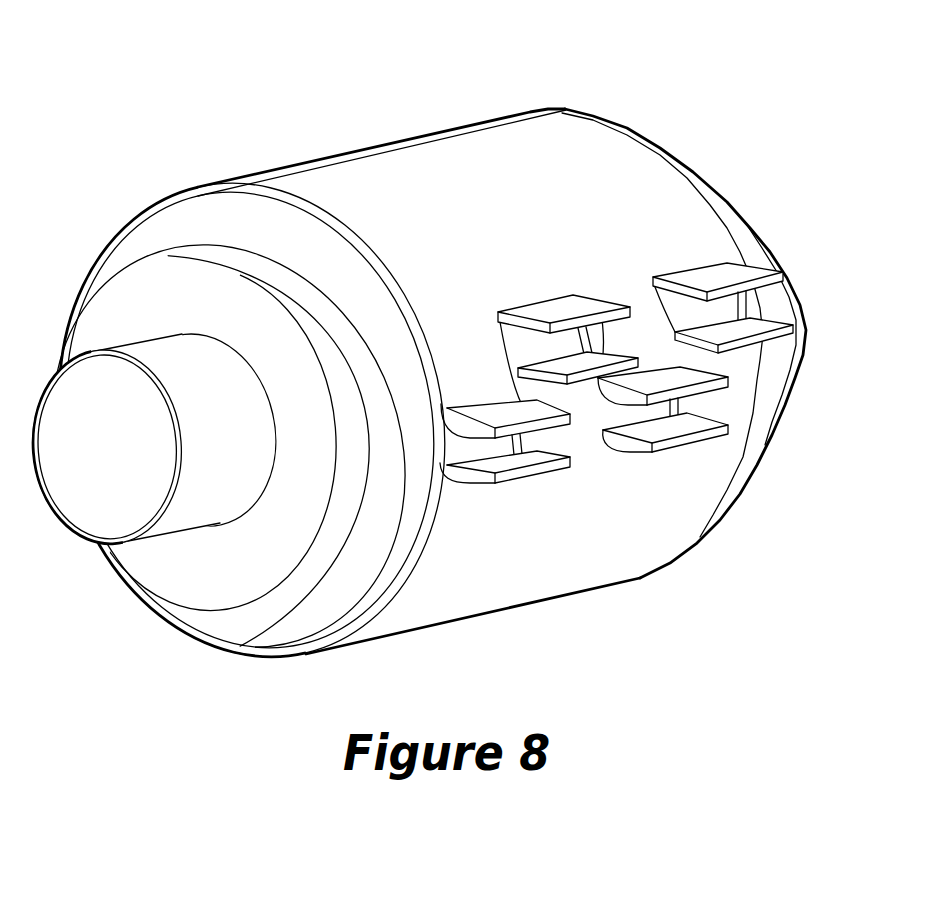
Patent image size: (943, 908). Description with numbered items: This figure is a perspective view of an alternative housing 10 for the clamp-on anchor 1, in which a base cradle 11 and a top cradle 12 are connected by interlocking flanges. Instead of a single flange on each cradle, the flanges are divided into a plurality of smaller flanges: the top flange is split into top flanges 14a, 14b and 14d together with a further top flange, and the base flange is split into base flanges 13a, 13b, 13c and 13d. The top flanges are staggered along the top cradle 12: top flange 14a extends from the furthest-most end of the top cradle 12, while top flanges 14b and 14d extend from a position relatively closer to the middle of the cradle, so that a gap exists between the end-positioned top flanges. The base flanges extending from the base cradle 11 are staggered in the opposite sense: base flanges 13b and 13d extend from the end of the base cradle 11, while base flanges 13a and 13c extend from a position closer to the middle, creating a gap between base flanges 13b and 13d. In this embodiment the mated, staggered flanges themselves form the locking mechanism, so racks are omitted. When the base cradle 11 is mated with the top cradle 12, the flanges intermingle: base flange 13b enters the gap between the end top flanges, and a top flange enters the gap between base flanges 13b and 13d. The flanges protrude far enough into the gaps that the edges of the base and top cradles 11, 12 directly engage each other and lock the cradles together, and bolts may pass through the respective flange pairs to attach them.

The anchor 1 is at (376, 136).
The housing 10 is at (704, 163).
The base cradle 11 is at (507, 596).
The top cradle 12 is at (585, 148).
The base flange 13a is at (520, 483).
The base flange 13b is at (586, 368).
The base flange 13c is at (663, 452).
The base flange 13d is at (777, 325).
The top flange 14a is at (528, 425).
The top flange 14b is at (588, 312).
The top flange 14d is at (730, 285).